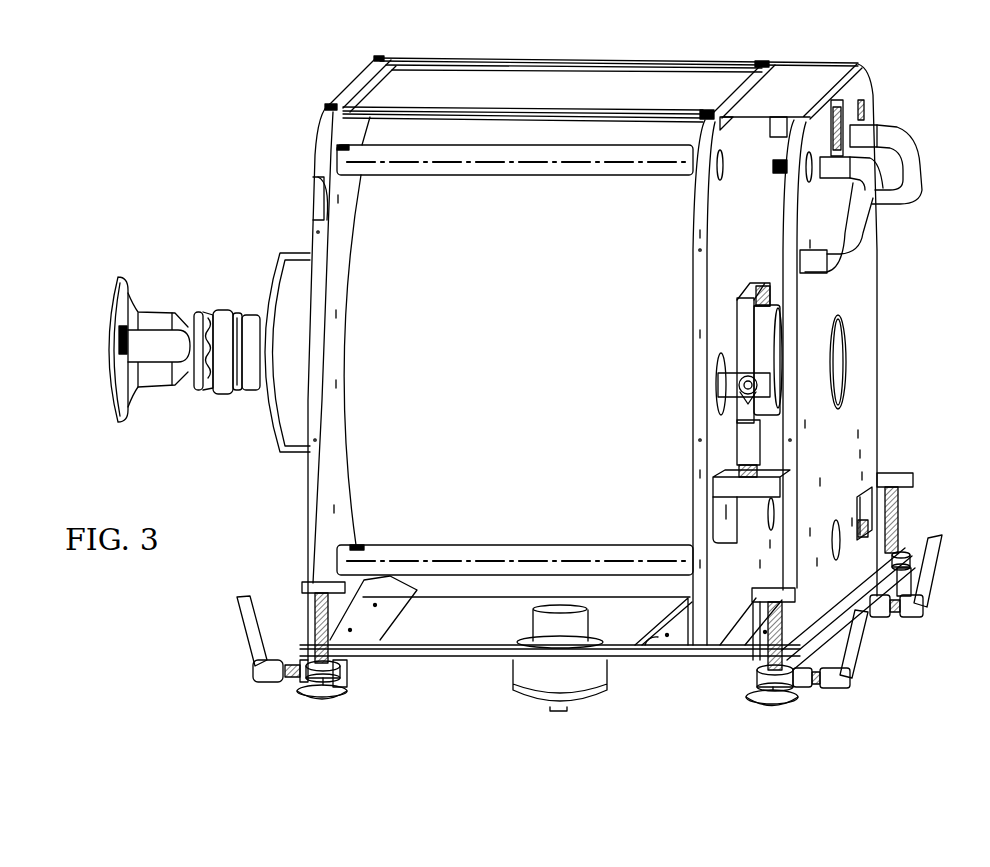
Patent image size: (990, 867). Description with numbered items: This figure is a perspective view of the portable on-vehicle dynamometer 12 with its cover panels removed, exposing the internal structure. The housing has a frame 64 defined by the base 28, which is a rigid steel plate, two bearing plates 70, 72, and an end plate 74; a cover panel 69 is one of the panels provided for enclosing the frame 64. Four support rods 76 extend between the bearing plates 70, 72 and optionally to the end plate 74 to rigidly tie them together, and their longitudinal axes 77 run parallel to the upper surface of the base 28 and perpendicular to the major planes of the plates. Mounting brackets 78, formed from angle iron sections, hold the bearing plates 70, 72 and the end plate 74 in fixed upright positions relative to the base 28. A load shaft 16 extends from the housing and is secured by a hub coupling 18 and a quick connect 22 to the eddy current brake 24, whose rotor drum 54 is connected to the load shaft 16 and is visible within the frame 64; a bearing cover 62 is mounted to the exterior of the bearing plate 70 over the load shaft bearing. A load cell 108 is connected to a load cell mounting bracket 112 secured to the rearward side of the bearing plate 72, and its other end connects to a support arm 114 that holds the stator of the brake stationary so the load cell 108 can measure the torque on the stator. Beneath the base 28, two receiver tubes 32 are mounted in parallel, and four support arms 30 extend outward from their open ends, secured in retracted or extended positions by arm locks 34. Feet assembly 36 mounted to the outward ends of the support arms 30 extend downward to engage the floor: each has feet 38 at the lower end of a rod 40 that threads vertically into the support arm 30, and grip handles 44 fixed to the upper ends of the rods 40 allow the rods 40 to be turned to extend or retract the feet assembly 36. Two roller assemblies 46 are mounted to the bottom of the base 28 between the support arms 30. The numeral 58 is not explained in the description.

The portable on-vehicle dynamometer 12 is at (132, 194).
The load shaft 16 is at (283, 373).
The hub coupling 18 is at (106, 350).
The quick connect 22 is at (250, 312).
The eddy current brake 24 is at (634, 96).
The base 28 is at (468, 663).
The support arms 30 is at (754, 678).
The receiver tubes 32 is at (360, 668).
The arm locks 34 is at (240, 640).
The feet assembly 36 is at (300, 698).
The feet 38 is at (325, 704).
The rod 40 is at (316, 620).
The grip handles 44 is at (310, 584).
The roller assemblies 46 is at (582, 708).
The rotor drum 54 is at (534, 376).
The slot 58 is at (837, 97).
The bearing cover 62 is at (292, 458).
The frame 64 is at (309, 151).
The cover panel 69 is at (792, 70).
The bearing plate 70 is at (310, 217).
The bearing plate 72 is at (705, 215).
The end plate 74 is at (872, 272).
The support rods 76 is at (555, 176).
The longitudinal axes 77 is at (490, 168).
The mounting brackets 78 is at (392, 615).
The load cell 108 is at (735, 430).
The load cell mounting bracket 112 is at (720, 518).
The support arm 114 is at (722, 385).